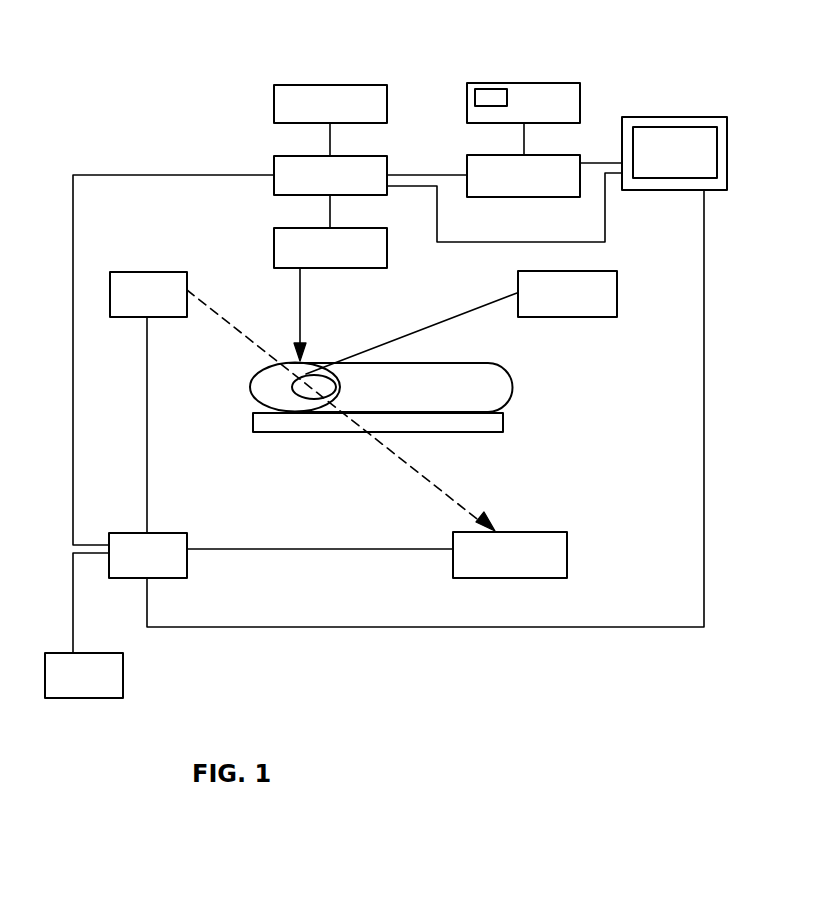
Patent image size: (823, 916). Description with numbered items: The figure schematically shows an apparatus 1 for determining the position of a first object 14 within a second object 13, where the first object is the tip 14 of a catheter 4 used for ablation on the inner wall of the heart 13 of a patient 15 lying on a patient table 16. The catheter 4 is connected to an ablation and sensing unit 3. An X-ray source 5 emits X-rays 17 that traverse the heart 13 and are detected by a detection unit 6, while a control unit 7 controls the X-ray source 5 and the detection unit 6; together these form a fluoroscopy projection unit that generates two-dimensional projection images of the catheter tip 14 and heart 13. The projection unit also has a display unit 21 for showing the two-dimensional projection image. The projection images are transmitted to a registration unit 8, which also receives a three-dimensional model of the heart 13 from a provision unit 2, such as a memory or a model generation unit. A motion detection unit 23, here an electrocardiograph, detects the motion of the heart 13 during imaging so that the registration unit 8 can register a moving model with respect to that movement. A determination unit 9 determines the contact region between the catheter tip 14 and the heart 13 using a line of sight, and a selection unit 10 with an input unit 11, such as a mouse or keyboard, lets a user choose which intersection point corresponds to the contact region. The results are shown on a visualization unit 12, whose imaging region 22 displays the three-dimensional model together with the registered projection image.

The apparatus 1 is at (595, 48).
The provision unit 2 is at (274, 100).
The ablation and sensing unit 3 is at (617, 296).
The catheter 4 is at (307, 375).
The X-ray source 5 is at (142, 272).
The detection unit 6 is at (567, 553).
The control unit 7 is at (128, 578).
The registration unit 8 is at (274, 163).
The determination unit 9 is at (492, 197).
The selection unit 10 is at (490, 83).
The input unit 11 is at (475, 97).
The visualization unit 12 is at (653, 190).
The second object 13 is at (316, 399).
The first object 14 is at (293, 397).
The patient 15 is at (511, 380).
The patient table 16 is at (473, 432).
The X-rays 17 is at (420, 471).
The display unit 21 is at (123, 680).
The imaging region 22 is at (703, 127).
The motion detection unit 23 is at (274, 253).